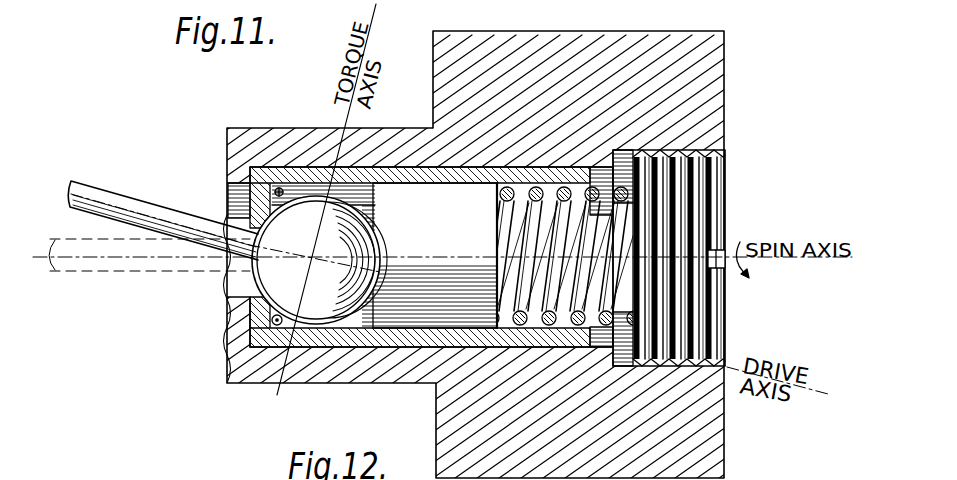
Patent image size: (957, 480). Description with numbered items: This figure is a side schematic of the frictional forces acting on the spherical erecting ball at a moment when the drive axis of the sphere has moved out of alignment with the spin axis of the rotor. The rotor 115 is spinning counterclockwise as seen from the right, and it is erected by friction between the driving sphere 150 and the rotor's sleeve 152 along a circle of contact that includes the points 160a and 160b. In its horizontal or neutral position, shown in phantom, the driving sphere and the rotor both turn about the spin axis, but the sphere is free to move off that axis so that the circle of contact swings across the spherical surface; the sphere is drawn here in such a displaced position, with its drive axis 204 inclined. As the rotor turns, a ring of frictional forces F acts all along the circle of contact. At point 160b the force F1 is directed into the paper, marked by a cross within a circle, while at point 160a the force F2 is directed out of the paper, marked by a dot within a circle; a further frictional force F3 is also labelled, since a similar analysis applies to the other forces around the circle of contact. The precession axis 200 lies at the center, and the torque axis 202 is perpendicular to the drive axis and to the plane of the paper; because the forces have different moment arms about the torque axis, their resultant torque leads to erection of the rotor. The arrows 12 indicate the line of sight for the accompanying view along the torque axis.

The drive shaft 12 is at (853, 381).
The rotor 115 is at (726, 466).
The driving sphere 150 is at (316, 260).
The rotor's sleeve 152 is at (253, 341).
The point on circle of contact 160a is at (270, 268).
The point on circle of contact 160b is at (270, 224).
The precession axis 200 is at (354, 260).
The torque axis 202 is at (343, 127).
The drive axis 204 is at (808, 388).
The frictional forces F is at (265, 270).
The frictional force at point 160b F1 is at (272, 225).
The frictional force at point 160a F2 is at (265, 297).
The force component F3 is at (380, 252).